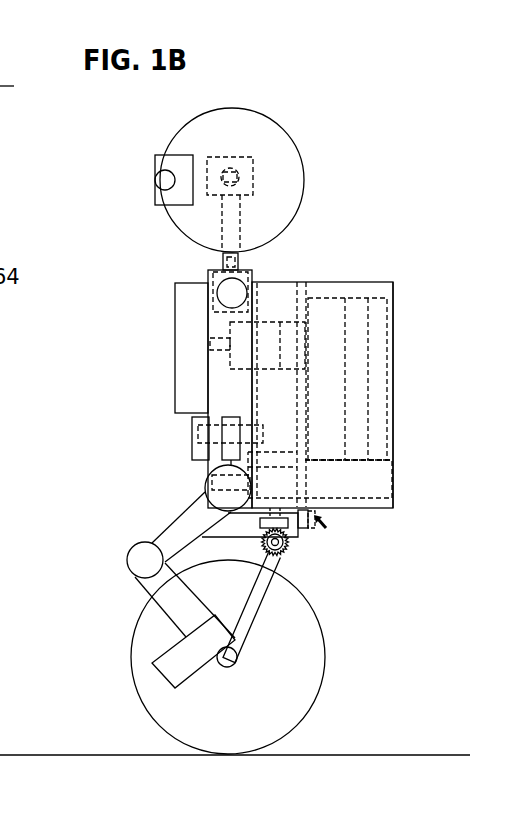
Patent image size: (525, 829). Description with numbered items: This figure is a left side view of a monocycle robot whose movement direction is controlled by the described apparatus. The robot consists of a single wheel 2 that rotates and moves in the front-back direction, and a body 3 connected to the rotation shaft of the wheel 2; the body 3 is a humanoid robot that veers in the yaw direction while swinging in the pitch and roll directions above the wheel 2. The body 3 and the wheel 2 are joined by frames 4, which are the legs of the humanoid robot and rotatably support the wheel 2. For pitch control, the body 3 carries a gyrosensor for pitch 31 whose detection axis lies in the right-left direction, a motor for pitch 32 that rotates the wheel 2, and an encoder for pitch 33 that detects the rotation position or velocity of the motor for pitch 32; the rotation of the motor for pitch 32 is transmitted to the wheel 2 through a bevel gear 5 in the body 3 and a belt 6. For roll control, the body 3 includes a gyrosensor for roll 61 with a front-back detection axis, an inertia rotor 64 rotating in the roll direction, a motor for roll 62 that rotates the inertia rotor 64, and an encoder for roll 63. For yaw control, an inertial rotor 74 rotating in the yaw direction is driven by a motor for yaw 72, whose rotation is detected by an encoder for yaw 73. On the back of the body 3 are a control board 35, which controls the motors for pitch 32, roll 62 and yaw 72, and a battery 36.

The wheel 2 is at (322, 683).
The body 3 is at (157, 270).
The frames 4 is at (178, 606).
The bevel gear 5 is at (288, 552).
The belt 6 is at (262, 607).
The gyrosensor for pitch 31 is at (208, 417).
The motor for pitch 32 is at (283, 473).
The encoder for pitch 33 is at (287, 445).
The control board 35 is at (320, 313).
The battery 36 is at (385, 492).
The gyrosensor for roll 61 is at (197, 435).
The motor for roll 62 is at (272, 350).
The encoder for roll 63 is at (287, 350).
The inertia rotor 64 is at (175, 368).
The motor for yaw 72 is at (215, 455).
The encoder for yaw 73 is at (217, 482).
The inertial rotor 74 is at (260, 432).